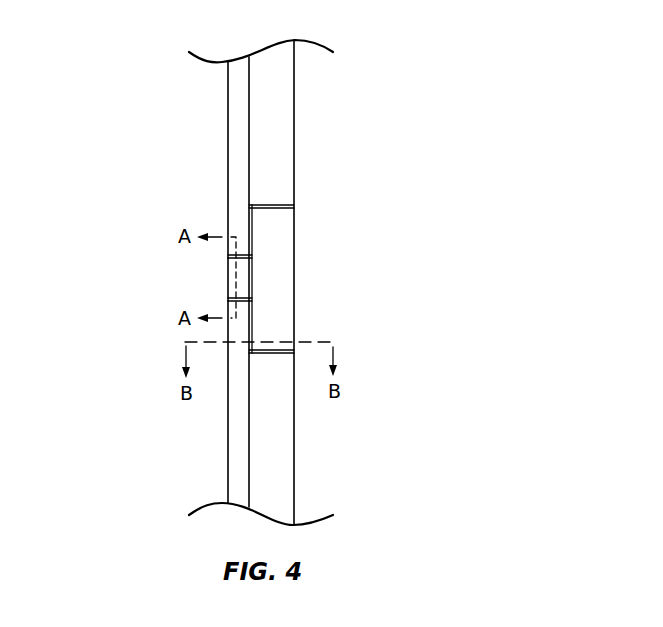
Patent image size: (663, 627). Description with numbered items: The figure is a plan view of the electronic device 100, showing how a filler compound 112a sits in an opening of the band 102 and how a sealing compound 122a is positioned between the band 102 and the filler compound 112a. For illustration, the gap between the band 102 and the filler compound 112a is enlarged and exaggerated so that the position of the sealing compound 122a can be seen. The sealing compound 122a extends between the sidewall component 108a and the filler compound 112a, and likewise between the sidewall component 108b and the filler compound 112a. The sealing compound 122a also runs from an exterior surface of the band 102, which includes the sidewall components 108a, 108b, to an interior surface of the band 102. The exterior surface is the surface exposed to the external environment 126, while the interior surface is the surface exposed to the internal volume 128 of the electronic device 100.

The electronic device 100 is at (530, 100).
The band 102 is at (172, 140).
The sidewall component 108a is at (227, 455).
The sidewall component 108b is at (227, 180).
The filler compound 112a is at (227, 277).
The sealing compound 122a is at (294, 207).
The external environment 126 is at (64, 316).
The internal volume 128 is at (508, 306).